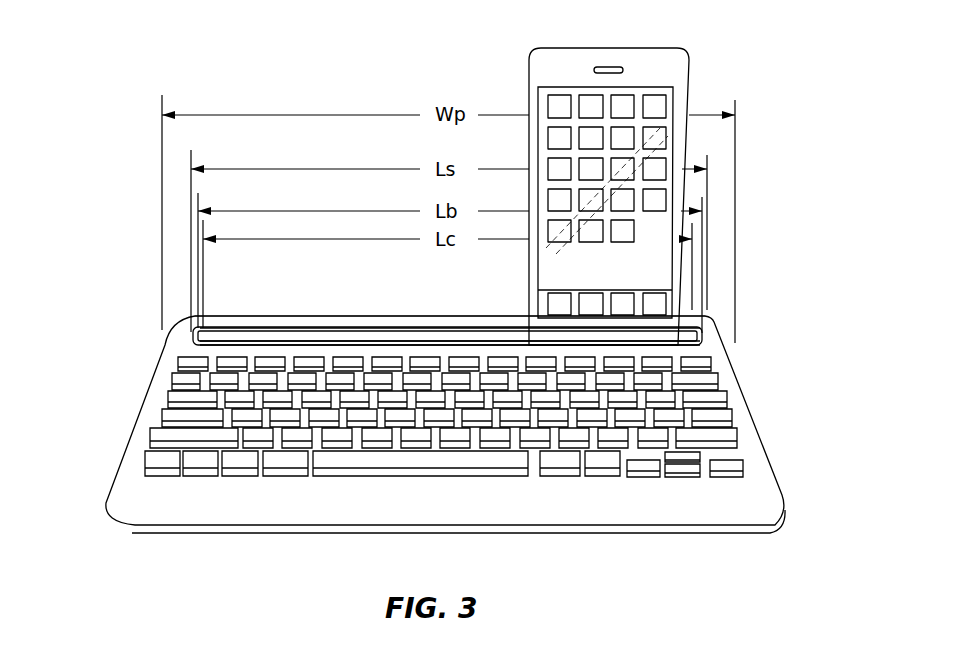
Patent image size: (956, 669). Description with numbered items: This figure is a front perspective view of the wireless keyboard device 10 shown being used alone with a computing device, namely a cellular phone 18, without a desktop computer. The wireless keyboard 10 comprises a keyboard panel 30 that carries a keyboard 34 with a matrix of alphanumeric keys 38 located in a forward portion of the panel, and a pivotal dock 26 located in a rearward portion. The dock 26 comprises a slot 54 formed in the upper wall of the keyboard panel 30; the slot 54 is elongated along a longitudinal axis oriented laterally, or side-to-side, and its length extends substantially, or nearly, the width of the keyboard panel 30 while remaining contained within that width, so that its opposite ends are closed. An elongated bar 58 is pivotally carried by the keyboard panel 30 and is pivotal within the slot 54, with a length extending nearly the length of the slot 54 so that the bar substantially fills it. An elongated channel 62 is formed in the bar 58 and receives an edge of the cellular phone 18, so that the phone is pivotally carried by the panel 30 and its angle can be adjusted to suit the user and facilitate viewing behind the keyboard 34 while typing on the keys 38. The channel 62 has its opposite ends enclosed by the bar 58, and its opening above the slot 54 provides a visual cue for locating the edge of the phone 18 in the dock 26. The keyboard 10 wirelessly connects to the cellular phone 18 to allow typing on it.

The wireless keyboard device 10 is at (761, 381).
The cellular phone 18 is at (657, 65).
The pivotal dock 26 is at (498, 328).
The keyboard panel 30 is at (741, 495).
The keyboard 34 is at (175, 437).
The alphanumeric keys 38 is at (203, 460).
The slot 54 is at (244, 336).
The elongated bar 58 is at (317, 325).
The elongated channel 62 is at (413, 325).